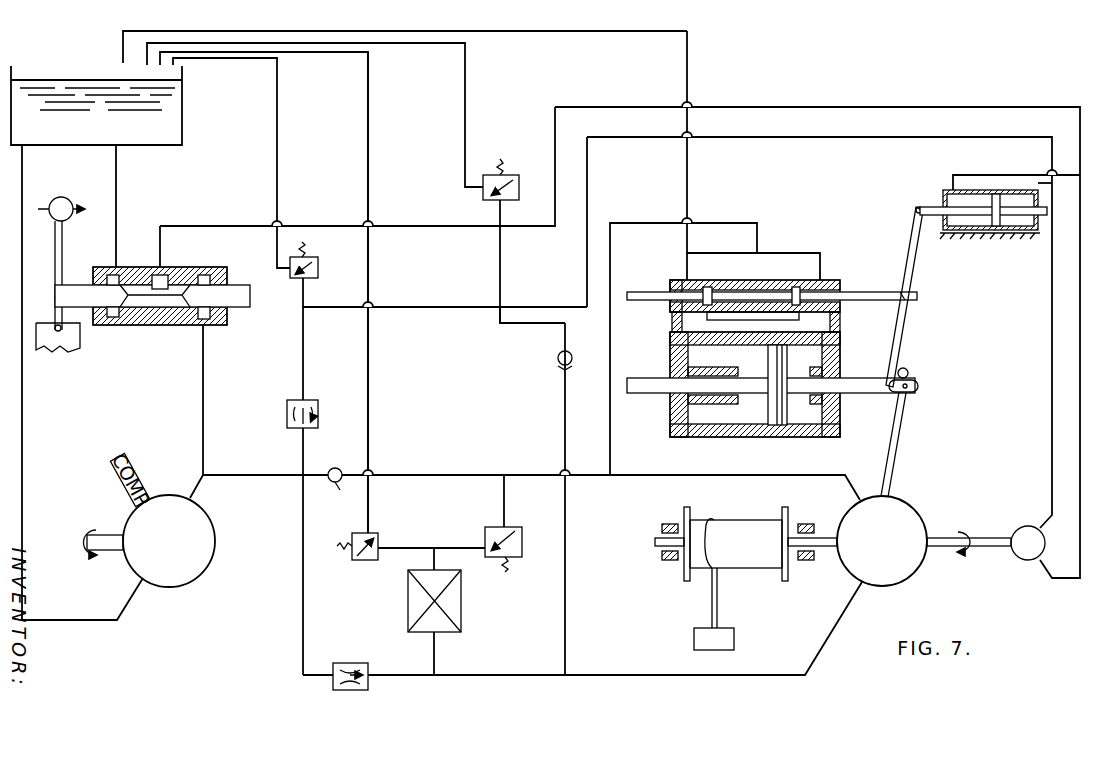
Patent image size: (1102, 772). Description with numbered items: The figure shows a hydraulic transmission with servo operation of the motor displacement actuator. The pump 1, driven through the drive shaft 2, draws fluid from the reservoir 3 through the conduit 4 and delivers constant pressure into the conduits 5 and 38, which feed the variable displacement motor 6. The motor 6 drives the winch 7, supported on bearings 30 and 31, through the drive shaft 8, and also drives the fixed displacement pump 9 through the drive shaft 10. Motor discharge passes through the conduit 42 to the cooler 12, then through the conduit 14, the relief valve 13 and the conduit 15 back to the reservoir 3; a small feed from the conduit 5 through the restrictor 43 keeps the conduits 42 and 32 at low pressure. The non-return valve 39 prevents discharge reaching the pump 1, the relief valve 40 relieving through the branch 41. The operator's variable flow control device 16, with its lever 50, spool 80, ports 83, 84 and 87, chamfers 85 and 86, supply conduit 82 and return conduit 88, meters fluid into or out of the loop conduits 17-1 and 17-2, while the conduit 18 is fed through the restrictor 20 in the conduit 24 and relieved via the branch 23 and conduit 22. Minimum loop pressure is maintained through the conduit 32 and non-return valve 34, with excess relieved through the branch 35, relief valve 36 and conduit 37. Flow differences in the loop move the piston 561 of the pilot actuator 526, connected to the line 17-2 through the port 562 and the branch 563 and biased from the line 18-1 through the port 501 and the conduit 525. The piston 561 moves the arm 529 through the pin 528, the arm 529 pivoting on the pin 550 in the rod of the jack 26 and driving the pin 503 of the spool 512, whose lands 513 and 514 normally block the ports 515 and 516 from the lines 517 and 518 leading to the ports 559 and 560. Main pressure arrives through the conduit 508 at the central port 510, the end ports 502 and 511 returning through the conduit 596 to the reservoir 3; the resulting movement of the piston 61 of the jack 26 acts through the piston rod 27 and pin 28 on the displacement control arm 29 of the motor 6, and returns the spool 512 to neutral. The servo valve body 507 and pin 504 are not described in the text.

The pump 1 is at (198, 568).
The drive shaft 2 is at (90, 533).
The reservoir 3 is at (185, 114).
The conduit 4 is at (24, 478).
The conduit 5 is at (222, 473).
The variable displacement motor 6 is at (920, 515).
The winch 7 is at (740, 515).
The drive shaft 8 is at (820, 555).
The pump 9 is at (1020, 560).
The drive shaft 10 is at (993, 533).
The cooler 12 is at (461, 616).
The relief valve 13 is at (368, 553).
The conduit 14 is at (420, 546).
The conduit 15 is at (371, 386).
The variable flow control device 16 is at (167, 296).
The loop circuit conduit 17-1 is at (452, 237).
The loop circuit conduit 17-2 is at (1078, 334).
The conduit 18 is at (441, 305).
The conduit 18-1 is at (868, 137).
The restrictor 20 is at (320, 410).
The conduit 22 is at (318, 262).
The branch 23 is at (305, 296).
The conduit 24 is at (305, 366).
The jack 26 is at (770, 399).
The piston rod 27 is at (860, 410).
The pin 28 is at (917, 385).
The displacement control arm 29 is at (897, 440).
The bearing 30 is at (672, 522).
The bearing 31 is at (810, 522).
The conduit 32 is at (567, 617).
The non-return valve 34 is at (558, 362).
The branch 35 is at (498, 214).
The relief valve 36 is at (515, 176).
The conduit 37 is at (467, 118).
The conduit 38 is at (388, 478).
The non-return valve 39 is at (330, 491).
The relief valve 40 is at (510, 552).
The branch 41 is at (506, 503).
The conduit 42 is at (436, 658).
The restrictor 43 is at (352, 663).
The lever 50 is at (66, 203).
The piston 61 is at (780, 425).
The spool 80 is at (245, 306).
The conduit 82 is at (201, 382).
The port 83 is at (205, 325).
The port 84 is at (162, 266).
The chamfer 85 is at (205, 278).
The chamfer 86 is at (130, 300).
The port 87 is at (114, 267).
The conduit 88 is at (117, 206).
The port 501 is at (980, 187).
The end port 502 is at (843, 282).
The pin 503 is at (934, 309).
The pin 504 is at (880, 297).
The servo valve body 507 is at (772, 268).
The conduit 508 is at (755, 220).
The central port 510 is at (750, 268).
The end port 511 is at (680, 280).
The spool 512 is at (765, 290).
The land 513 is at (705, 287).
The land 514 is at (796, 287).
The port 515 is at (682, 318).
The port 516 is at (792, 316).
The line 517 is at (685, 330).
The line 518 is at (840, 322).
The conduit 525 is at (1047, 140).
The pilot actuator 526 is at (943, 200).
The pin 528 is at (914, 212).
The arm 529 is at (917, 268).
The pin 550 is at (908, 372).
The port 559 is at (692, 345).
The port 560 is at (870, 351).
The piston 561 is at (998, 230).
The port 562 is at (942, 192).
The branch 563 is at (976, 175).
The conduit 596 is at (689, 185).